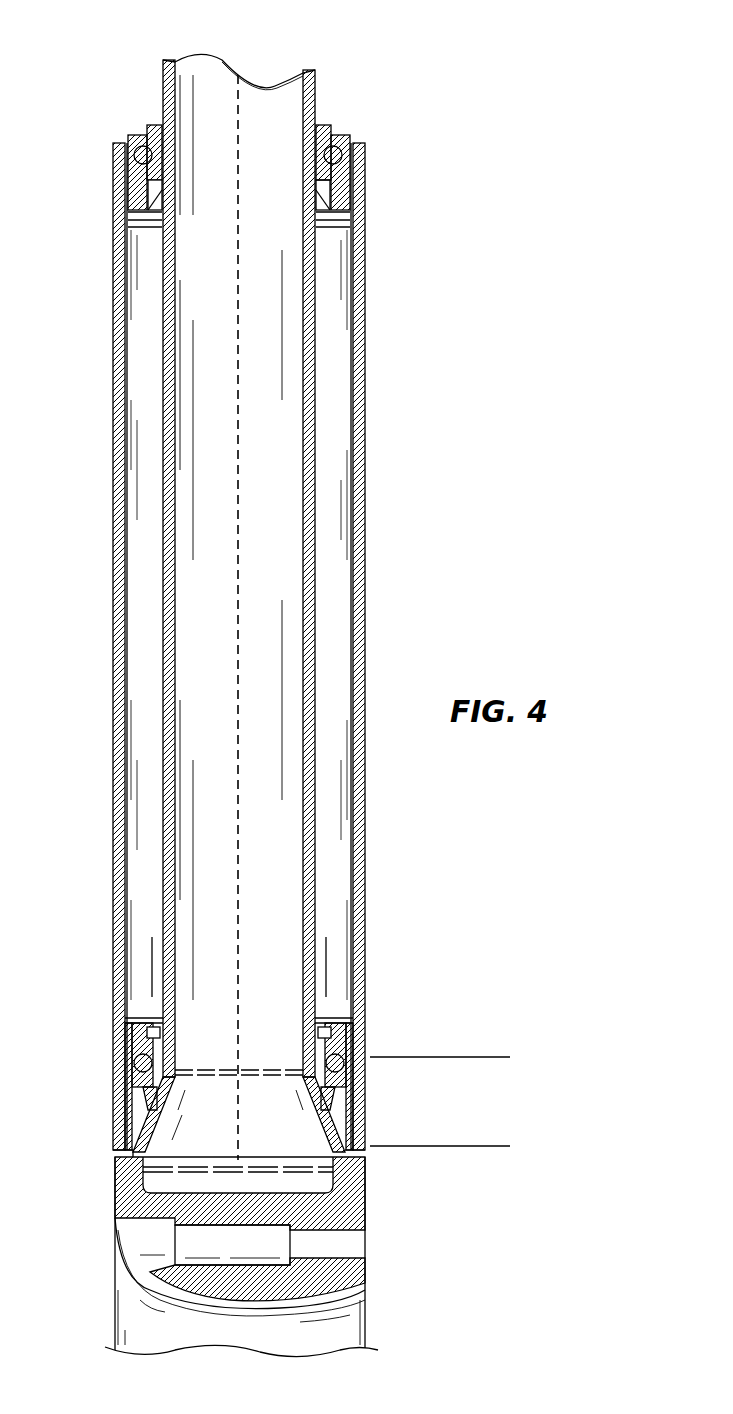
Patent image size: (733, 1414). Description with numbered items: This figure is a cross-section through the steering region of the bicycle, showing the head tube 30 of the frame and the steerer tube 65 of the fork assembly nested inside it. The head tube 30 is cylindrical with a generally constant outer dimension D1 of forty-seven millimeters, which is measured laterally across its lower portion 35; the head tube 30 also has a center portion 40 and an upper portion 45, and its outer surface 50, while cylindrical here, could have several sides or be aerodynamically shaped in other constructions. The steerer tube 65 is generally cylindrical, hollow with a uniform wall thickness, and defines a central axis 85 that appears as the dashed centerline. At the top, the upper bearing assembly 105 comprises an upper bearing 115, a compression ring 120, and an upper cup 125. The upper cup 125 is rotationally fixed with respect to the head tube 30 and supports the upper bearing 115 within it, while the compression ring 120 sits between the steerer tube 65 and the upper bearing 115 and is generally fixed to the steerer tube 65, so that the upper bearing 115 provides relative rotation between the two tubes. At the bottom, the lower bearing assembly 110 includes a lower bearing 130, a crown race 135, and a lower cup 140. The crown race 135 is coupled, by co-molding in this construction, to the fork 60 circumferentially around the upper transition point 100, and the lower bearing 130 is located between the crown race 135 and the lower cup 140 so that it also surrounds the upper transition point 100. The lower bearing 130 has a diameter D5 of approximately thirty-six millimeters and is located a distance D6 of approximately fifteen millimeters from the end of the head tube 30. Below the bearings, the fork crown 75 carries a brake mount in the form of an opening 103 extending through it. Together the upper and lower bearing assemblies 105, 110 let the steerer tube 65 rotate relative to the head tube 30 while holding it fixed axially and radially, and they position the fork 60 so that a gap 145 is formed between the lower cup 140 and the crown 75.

The head tube 30 is at (365, 440).
The lower portion 35 is at (113, 1065).
The center portion 40 is at (365, 590).
The upper portion 45 is at (113, 298).
The outer surface 50 is at (372, 375).
The fork 60 is at (365, 1202).
The steerer tube 65 is at (315, 650).
The fork crown 75 is at (112, 1200).
The central axis 85 is at (235, 232).
The upper transition point 100 is at (298, 1080).
The opening 103 is at (365, 1243).
The upper bearing assembly 105 is at (126, 108).
The lower bearing assembly 110 is at (340, 998).
The upper bearing 115 is at (340, 135).
The compression ring 120 is at (322, 125).
The upper cup 125 is at (330, 227).
The lower bearing 130 is at (133, 1090).
The crown race 135 is at (350, 1093).
The lower cup 140 is at (145, 1017).
The gap 145 is at (118, 1157).
The outer dimension D1 is at (103, 1028).
The diameter D5 is at (318, 953).
The distance D6 is at (495, 1068).